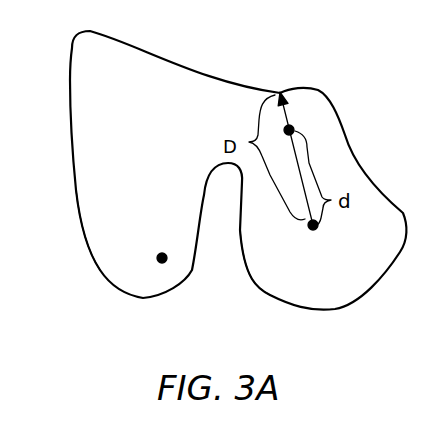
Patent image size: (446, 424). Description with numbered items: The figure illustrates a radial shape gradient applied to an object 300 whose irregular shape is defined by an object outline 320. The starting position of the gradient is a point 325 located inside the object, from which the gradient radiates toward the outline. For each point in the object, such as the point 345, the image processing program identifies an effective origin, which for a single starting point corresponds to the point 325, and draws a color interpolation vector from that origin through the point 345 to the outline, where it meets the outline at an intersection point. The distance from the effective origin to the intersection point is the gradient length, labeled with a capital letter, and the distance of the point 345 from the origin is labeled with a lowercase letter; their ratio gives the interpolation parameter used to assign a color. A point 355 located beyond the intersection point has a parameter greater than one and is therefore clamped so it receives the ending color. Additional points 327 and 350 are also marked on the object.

The object 300 is at (86, 282).
The object outline 320 is at (70, 116).
The point 325 is at (318, 224).
The reference point 327 is at (158, 258).
The point 345 is at (294, 130).
The base region 350 is at (310, 223).
The point 355 is at (278, 93).